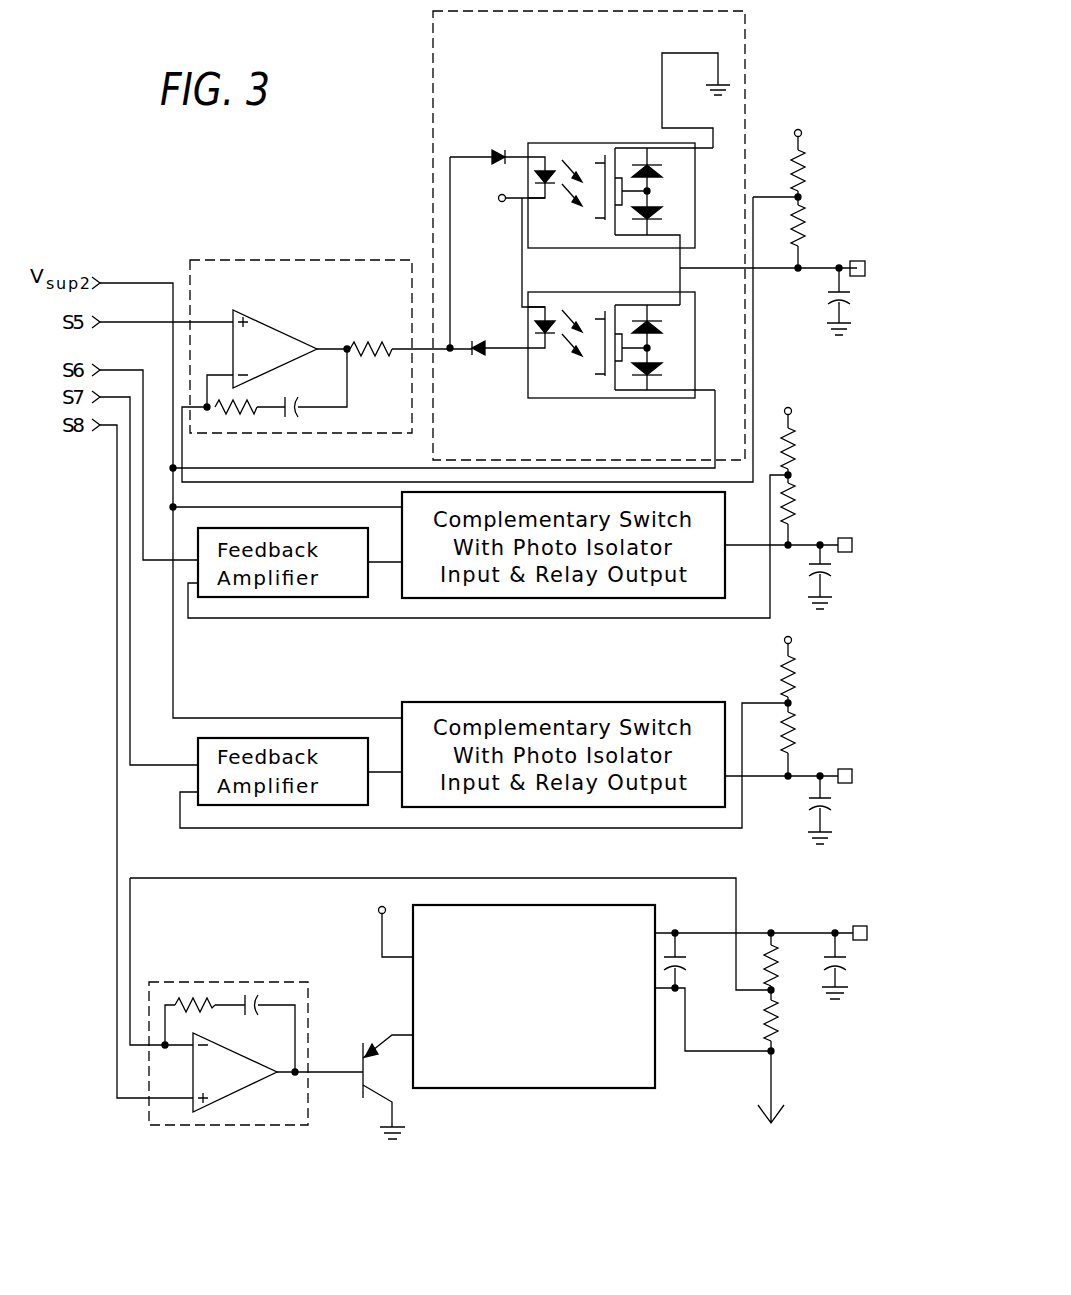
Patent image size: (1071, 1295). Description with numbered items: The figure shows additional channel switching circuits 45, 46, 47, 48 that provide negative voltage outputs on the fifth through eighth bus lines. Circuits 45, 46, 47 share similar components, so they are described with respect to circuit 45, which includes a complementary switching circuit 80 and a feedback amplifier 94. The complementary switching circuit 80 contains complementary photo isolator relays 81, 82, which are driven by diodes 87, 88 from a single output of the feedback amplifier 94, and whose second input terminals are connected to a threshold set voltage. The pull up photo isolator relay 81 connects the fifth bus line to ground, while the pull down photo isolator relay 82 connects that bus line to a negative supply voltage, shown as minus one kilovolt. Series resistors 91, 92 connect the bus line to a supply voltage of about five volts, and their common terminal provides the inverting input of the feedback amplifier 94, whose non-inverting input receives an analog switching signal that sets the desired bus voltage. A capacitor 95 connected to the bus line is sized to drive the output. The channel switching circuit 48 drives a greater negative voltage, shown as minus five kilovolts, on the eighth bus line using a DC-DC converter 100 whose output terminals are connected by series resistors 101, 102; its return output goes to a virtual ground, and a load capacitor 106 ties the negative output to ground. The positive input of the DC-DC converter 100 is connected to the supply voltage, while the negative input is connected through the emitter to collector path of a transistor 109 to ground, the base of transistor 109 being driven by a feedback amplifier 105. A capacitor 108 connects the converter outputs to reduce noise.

The channel switching circuit 45 is at (840, 232).
The channel switching circuit 46 is at (812, 425).
The channel switching circuit 47 is at (815, 678).
The channel switching circuit 48 is at (527, 1016).
The complementary switching circuit 80 is at (740, 35).
The pull up photo isolator relay 81 is at (560, 248).
The pull down photo isolator relay 82 is at (565, 399).
The diode 87 is at (490, 152).
The diode 88 is at (482, 338).
The series resistor 91 is at (792, 165).
The series resistor 92 is at (795, 240).
The feedback amplifier 94 is at (407, 285).
The capacitor 95 is at (828, 298).
The DC-DC converter 100 is at (650, 1082).
The series resistor 101 is at (776, 955).
The series resistor 102 is at (768, 1036).
The feedback amplifier 105 is at (295, 1118).
The load capacitor 106 is at (822, 960).
The capacitor 108 is at (690, 960).
The transistor 109 is at (395, 1093).